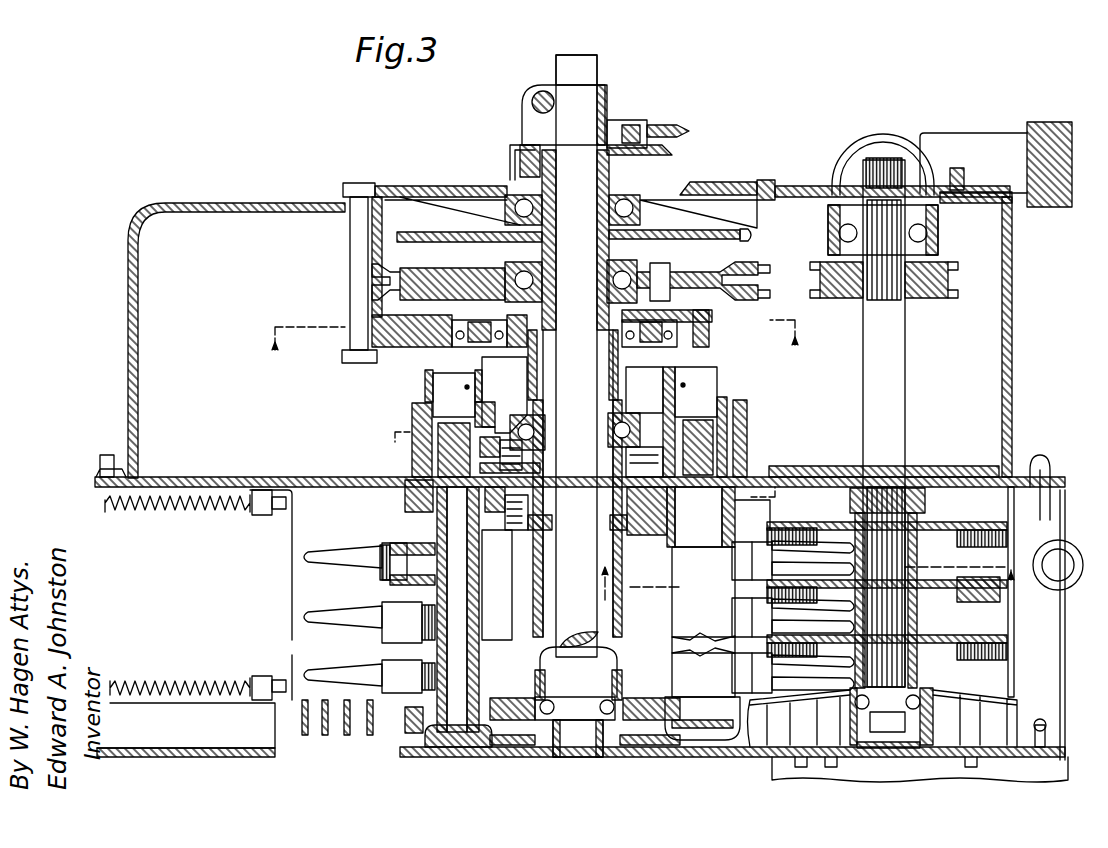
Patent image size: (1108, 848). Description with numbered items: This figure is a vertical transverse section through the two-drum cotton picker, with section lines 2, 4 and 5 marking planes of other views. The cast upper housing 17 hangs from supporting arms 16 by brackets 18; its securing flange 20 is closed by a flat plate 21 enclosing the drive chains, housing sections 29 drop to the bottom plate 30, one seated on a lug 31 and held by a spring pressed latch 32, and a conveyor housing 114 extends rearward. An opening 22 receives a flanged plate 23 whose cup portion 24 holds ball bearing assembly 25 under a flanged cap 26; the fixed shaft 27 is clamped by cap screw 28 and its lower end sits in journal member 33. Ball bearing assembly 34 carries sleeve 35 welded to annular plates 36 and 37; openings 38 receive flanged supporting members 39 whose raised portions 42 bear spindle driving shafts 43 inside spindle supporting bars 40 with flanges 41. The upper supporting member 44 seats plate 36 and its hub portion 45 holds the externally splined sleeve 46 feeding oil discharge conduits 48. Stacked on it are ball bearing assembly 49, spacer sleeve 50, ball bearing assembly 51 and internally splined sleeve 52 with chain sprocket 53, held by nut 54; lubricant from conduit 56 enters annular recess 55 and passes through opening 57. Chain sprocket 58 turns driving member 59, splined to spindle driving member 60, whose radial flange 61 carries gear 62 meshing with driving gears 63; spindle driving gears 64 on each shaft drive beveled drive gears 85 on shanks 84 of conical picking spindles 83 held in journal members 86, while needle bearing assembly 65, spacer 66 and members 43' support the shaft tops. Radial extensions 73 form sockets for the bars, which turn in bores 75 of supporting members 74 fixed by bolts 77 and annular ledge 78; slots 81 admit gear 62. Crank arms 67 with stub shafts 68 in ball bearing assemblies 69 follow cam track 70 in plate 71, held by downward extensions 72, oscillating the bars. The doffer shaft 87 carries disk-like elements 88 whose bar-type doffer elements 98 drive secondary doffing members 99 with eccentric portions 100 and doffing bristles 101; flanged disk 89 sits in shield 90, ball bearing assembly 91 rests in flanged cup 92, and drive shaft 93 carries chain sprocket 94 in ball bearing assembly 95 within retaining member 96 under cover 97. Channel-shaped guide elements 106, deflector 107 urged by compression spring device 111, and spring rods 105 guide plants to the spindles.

The section line 2 is at (535, 323).
The section line 4 is at (807, 591).
The section line 5 is at (582, 464).
The supporting arms 16 is at (1060, 128).
The upper housing 17 is at (1012, 268).
The brackets 18 is at (995, 140).
The securing flange 20 is at (100, 466).
The flat plate 21 is at (190, 465).
The openings 22 is at (420, 172).
The flanged plates 23 is at (700, 182).
The cup portion 24 is at (655, 186).
The ball bearing assembly 25 is at (642, 206).
The flanged cap 26 is at (605, 90).
The shaft 27 is at (582, 70).
The cap screw 28 is at (540, 95).
The housing sections 29 is at (1052, 505).
The bottom plate 30 is at (222, 748).
The projecting lug 31 is at (1048, 728).
The spring pressed latch 32 is at (1075, 580).
The journal member 33 is at (600, 760).
The ball bearing assembly 34 is at (540, 740).
The sleeve 35 is at (602, 642).
The annular plate 36 is at (632, 536).
The annular plate 37 is at (638, 708).
The openings 38 is at (405, 735).
The flanged supporting members 39 is at (425, 745).
The spindle supporting bars 40 is at (483, 660).
The flanges 41 is at (535, 690).
The raised portions 42 is at (450, 750).
The spindle driving shafts 43 is at (602, 625).
The members 43' is at (573, 415).
The upper supporting member 44 is at (488, 540).
The hub portion 45 is at (576, 356).
The externally splined sleeve 46 is at (577, 483).
The oil discharge conduit 48 is at (577, 511).
The ball bearing assembly 49 is at (512, 415).
The spacer sleeve 50 is at (556, 365).
The ball bearing assembly 51 is at (520, 257).
The internally splined sleeve 52 is at (630, 247).
The chain sprocket 53 is at (750, 234).
The nut 54 is at (515, 160).
The annular recess 55 is at (530, 150).
The lubricant conduit 56 is at (628, 124).
The opening 57 is at (660, 132).
The chain sprocket 58 is at (770, 270).
The driving member 59 is at (700, 272).
The spindle driving member 60 is at (645, 345).
The radial flange 61 is at (698, 434).
The gear 62 is at (727, 445).
The driving gears 63 is at (727, 425).
The spindle driving gears 64 is at (480, 630).
The needle bearing assembly 65 is at (405, 512).
The spacer 66 is at (458, 617).
The crank arms 67 is at (464, 392).
The stub shafts 68 is at (495, 345).
The ball bearing assemblies 69 is at (709, 340).
The cam track 70 is at (712, 316).
The plate 71 is at (345, 333).
The downward extensions 72 is at (345, 252).
The radial extensions 73 is at (415, 545).
The supporting members 74 is at (747, 405).
The bores 75 is at (727, 405).
The bolts 77 is at (770, 465).
The annular ledge 78 is at (701, 517).
The slot 81 is at (635, 422).
The conical picking spindle 83 is at (350, 565).
The shank 84 is at (385, 585).
The beveled drive gear 85 is at (455, 575).
The journal member 86 is at (385, 625).
The doffer shaft 87 is at (915, 505).
The disk-like elements 88 is at (950, 522).
The downwardly flanged disk 89 is at (920, 688).
The shield 90 is at (965, 695).
The ball bearing assembly 91 is at (891, 718).
The flanged cup 92 is at (925, 757).
The drive shaft 93 is at (905, 312).
The chain sprocket 94 is at (820, 272).
The ball bearing assembly 95 is at (928, 233).
The retaining member 96 is at (948, 175).
The cover 97 is at (872, 134).
The bar-type doffer elements 98 is at (1000, 600).
The secondary doffing members 99 is at (887, 594).
The eccentric portions 100 is at (1030, 620).
The doffing bristles 101 is at (1014, 655).
The secondary series of spring rods 105 is at (306, 740).
The channel-shaped guide elements 106 is at (380, 548).
The sheet metal deflector 107 is at (292, 553).
The compression spring device 111 is at (150, 520).
The housing 114 is at (1058, 760).